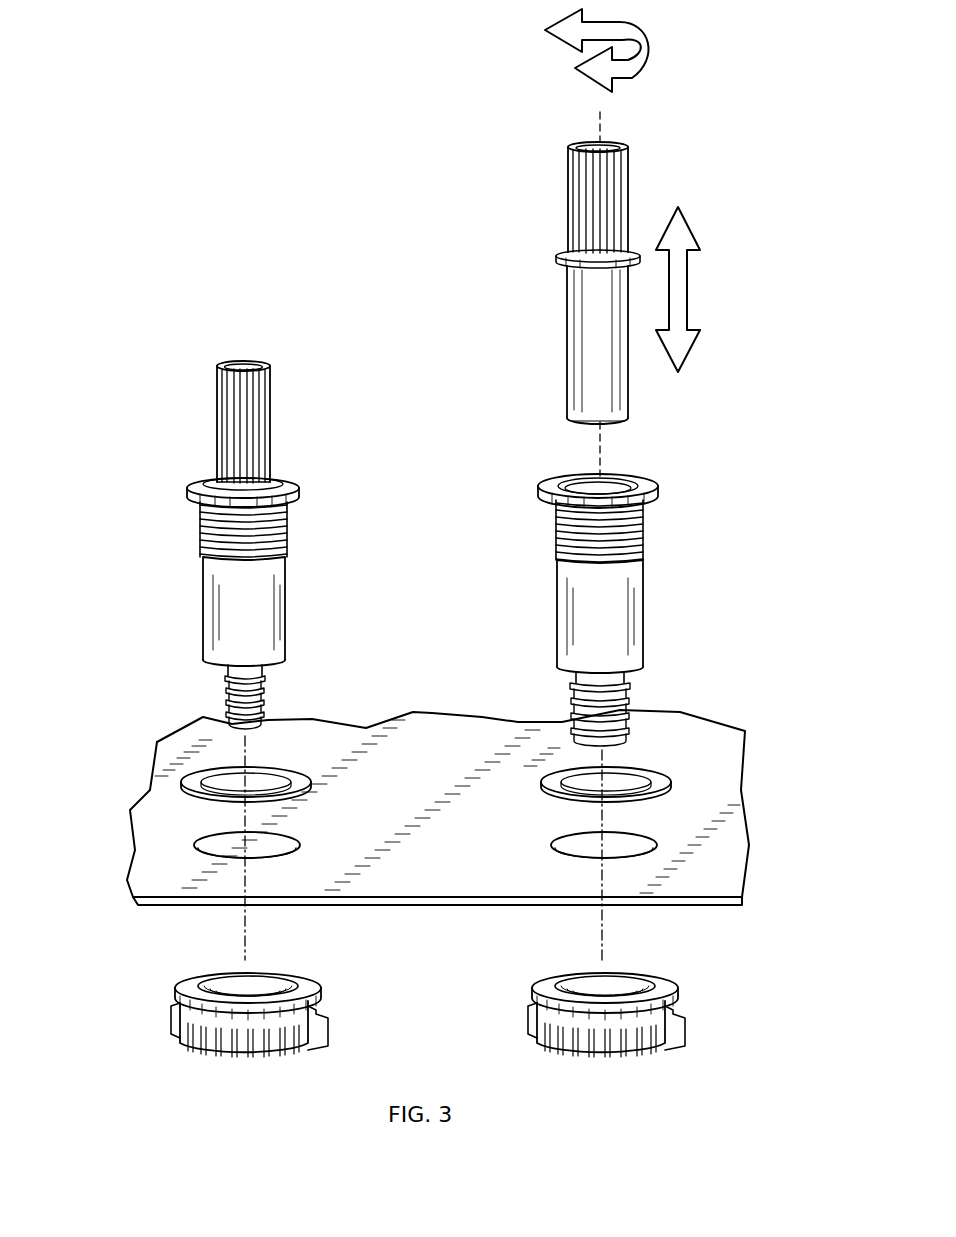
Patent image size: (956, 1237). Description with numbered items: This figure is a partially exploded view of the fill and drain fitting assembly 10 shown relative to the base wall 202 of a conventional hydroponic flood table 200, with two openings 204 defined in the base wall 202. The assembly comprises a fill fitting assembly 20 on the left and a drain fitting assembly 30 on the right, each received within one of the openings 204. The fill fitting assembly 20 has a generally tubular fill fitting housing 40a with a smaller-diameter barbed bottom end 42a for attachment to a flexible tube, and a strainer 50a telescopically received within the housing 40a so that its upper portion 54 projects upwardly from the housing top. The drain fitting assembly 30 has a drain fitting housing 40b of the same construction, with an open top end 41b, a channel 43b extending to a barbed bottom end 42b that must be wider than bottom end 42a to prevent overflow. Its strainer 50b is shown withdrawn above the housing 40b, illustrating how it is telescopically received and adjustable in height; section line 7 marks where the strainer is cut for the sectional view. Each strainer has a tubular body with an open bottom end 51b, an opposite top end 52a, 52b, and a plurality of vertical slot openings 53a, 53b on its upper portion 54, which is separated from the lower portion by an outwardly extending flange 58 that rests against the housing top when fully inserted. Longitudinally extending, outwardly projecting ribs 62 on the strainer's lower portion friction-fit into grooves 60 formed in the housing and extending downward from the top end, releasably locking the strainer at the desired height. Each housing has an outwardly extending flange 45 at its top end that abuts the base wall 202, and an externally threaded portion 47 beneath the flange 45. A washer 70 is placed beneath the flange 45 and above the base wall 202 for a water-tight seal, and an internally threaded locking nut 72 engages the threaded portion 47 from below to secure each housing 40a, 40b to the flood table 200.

The section line 7- 7 is at (594, 113).
The fill and drain fitting assembly 10 is at (172, 305).
The fill fitting assembly 20 is at (172, 446).
The drain fitting assembly 30 is at (740, 498).
The fill fitting housing 40a is at (204, 602).
The drain fitting housing 40b is at (648, 611).
The open top end of drain fitting housing 41b is at (633, 484).
The barbed bottom end of fill fitting housing 42a is at (256, 728).
The barbed bottom end of drain fitting housing 42b is at (628, 731).
The channel of drain fitting housing 43b is at (596, 505).
The outwardly extending flange 45 is at (290, 500).
The externally threaded portion 47 is at (206, 521).
The fill fitting strainer 50a is at (278, 405).
The drain fitting strainer 50b is at (640, 165).
The open bottom end of drain strainer 51b is at (622, 420).
The top end of fill strainer 52a is at (240, 362).
The top end of drain strainer 52b is at (576, 148).
The openings of fill strainer 53a is at (249, 462).
The openings of drain strainer 53b is at (603, 228).
The upper portion of strainer 54 is at (216, 407).
The flange of strainer 58 is at (285, 470).
The grooves 60 is at (580, 484).
The ribs 62 is at (606, 303).
The washer 70 is at (192, 785).
The locking nut 72 is at (207, 1045).
The hydroponic flood table 200 is at (429, 710).
The base wall 202 is at (447, 806).
The openings 204 is at (272, 855).